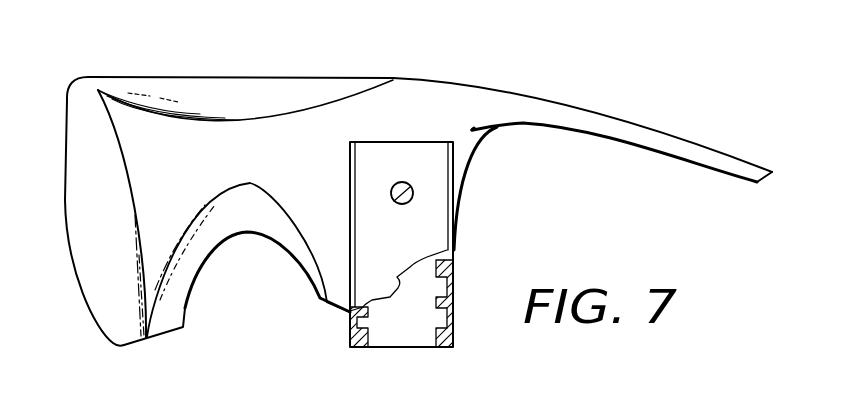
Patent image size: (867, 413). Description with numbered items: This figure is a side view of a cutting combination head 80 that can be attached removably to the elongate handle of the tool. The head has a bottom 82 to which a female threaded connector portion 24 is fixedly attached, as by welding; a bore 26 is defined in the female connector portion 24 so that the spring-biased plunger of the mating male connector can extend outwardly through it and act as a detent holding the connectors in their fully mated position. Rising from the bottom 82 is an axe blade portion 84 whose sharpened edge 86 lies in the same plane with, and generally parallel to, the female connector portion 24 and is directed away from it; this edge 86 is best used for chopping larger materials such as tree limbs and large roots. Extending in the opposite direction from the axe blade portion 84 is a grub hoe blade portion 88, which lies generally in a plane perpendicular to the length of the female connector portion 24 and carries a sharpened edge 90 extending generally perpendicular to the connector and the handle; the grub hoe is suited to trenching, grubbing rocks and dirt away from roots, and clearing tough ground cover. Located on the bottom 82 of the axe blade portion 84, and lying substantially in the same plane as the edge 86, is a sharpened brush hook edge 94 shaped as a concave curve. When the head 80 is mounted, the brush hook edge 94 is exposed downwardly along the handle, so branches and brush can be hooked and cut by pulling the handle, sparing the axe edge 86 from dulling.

The female threaded connector portion 24 is at (427, 227).
The bore 26 is at (413, 190).
The cutting combination head 80 is at (490, 127).
The bottom 82 is at (348, 314).
The axe blade portion 84 is at (238, 95).
The sharpened edge 86 is at (70, 220).
The grub hoe blade portion 88 is at (663, 123).
The sharpened edge 90 is at (772, 172).
The brush hook edge 94 is at (248, 233).